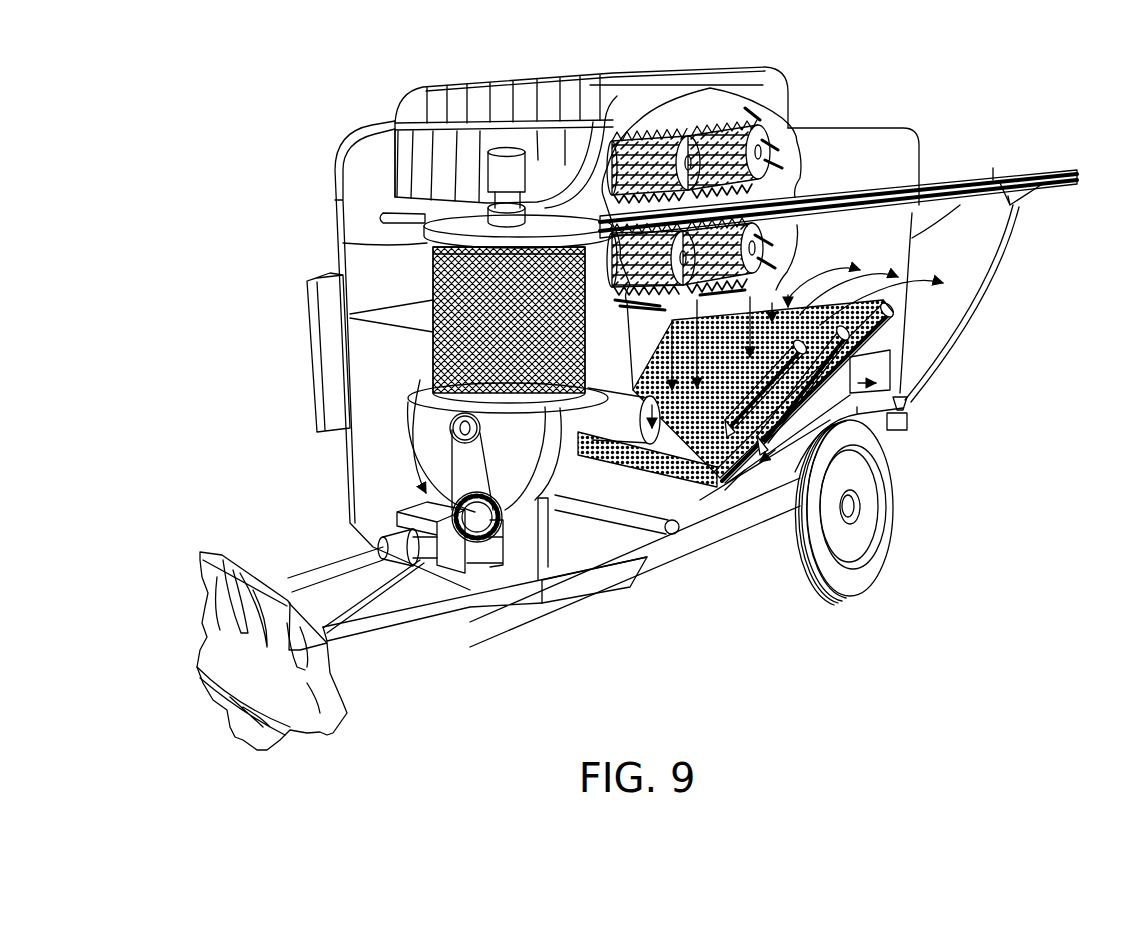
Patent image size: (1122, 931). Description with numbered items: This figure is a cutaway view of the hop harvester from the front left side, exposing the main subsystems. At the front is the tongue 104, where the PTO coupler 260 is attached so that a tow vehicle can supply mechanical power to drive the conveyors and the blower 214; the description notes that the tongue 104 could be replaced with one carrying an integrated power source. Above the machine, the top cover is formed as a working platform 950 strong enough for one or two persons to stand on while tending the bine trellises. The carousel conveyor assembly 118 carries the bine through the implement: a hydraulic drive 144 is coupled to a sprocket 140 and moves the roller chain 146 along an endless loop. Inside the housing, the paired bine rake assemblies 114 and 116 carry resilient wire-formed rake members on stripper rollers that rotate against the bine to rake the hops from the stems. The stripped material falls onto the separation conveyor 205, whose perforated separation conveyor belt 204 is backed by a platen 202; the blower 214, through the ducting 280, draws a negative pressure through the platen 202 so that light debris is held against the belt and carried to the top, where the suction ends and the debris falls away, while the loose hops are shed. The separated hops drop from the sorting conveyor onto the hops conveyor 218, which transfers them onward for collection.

The working platform 950 is at (553, 77).
The bine rake assembly 116 is at (622, 65).
The bine rake assembly 114 is at (700, 65).
The roller chain 146 is at (903, 200).
The hydraulic drive 144 is at (507, 170).
The separation conveyor belt 204 is at (803, 287).
The sprocket 140 is at (1077, 176).
The carousel conveyor assembly 118 is at (427, 243).
The separation conveyor 205 is at (917, 313).
The ducting 280 is at (900, 360).
The platen 202 is at (907, 407).
The PTO coupler 260 is at (330, 575).
The hops conveyor 218 is at (657, 497).
The tongue 104 is at (425, 625).
The blower 214 is at (570, 470).